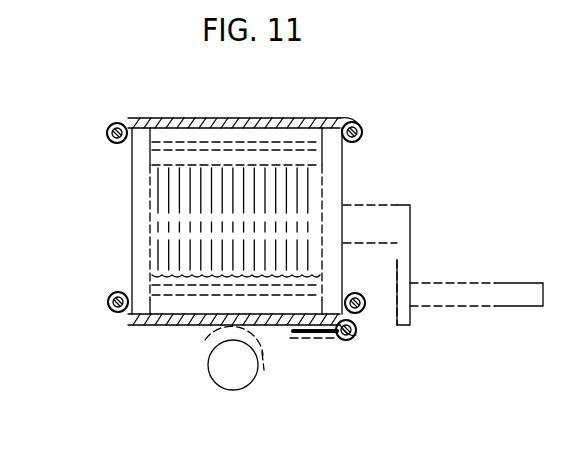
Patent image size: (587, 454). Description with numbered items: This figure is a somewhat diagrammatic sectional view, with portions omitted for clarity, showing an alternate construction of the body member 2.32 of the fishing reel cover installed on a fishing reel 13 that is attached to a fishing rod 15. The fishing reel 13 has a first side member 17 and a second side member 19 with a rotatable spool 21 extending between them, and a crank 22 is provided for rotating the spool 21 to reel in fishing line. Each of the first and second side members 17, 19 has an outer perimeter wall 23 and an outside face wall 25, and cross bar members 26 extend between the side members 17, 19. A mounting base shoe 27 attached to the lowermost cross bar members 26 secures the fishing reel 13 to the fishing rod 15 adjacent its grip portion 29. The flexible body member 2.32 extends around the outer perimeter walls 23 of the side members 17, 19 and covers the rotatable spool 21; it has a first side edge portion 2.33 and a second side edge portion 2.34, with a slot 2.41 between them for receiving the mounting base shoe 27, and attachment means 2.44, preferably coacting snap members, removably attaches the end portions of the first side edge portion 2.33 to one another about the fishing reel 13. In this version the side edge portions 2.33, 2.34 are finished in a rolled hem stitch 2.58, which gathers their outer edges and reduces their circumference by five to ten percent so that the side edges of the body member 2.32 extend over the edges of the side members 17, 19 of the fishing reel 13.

The fishing reel 13 is at (126, 224).
The fishing rod 15 is at (230, 398).
The first side member 17 is at (333, 205).
The second side member 19 is at (133, 187).
The rotatable spool 21 is at (174, 165).
The crank 22 is at (500, 283).
The outer perimeter wall 23 is at (130, 117).
The outside face wall 25 is at (133, 238).
The cross bar member 26 is at (222, 145).
The mounting base shoe 27 is at (266, 364).
The grip portion 29 is at (242, 383).
The body member 2.32 is at (297, 106).
The first side edge portion 2.33 is at (350, 122).
The second side edge portion 2.34 is at (125, 120).
The slot 2.41 is at (205, 338).
The attachment means 2.44 is at (282, 340).
The rolled hem stitch 2.58 is at (107, 133).